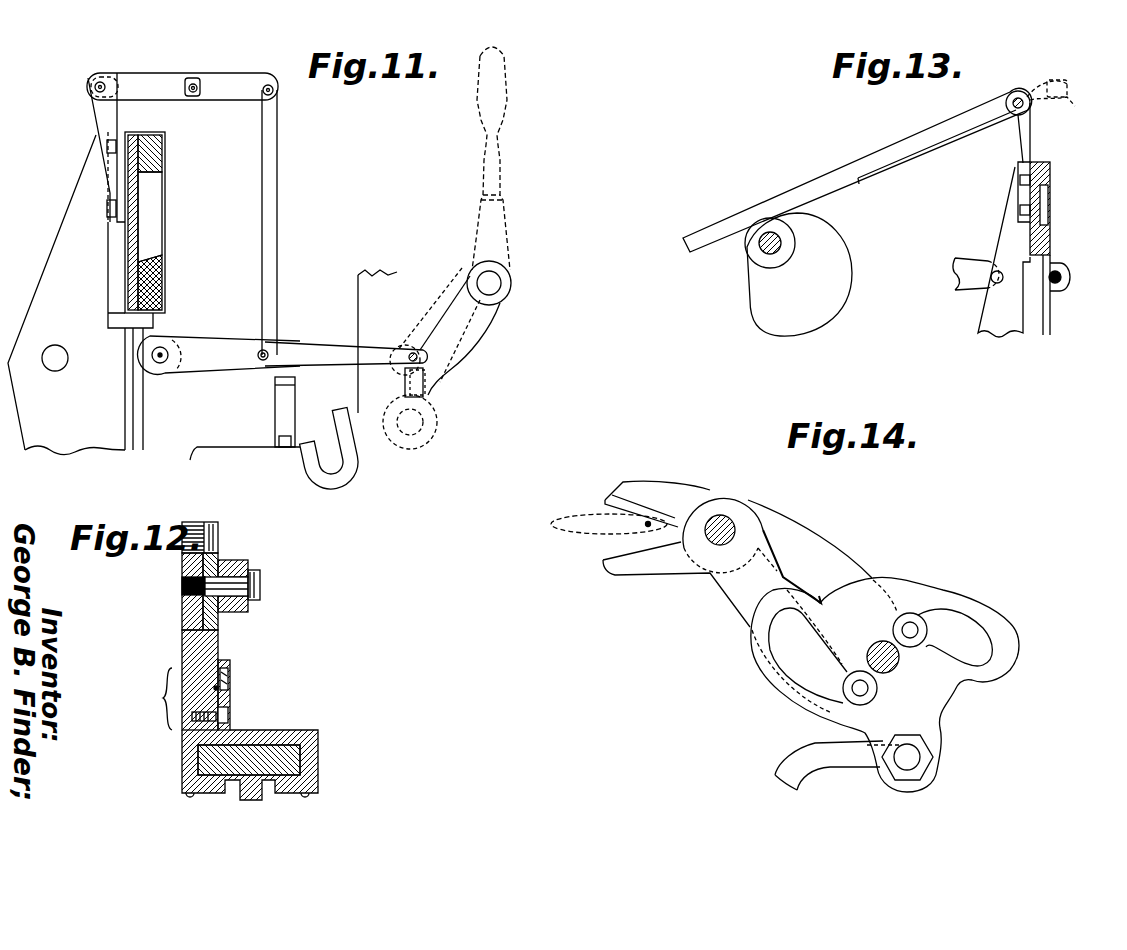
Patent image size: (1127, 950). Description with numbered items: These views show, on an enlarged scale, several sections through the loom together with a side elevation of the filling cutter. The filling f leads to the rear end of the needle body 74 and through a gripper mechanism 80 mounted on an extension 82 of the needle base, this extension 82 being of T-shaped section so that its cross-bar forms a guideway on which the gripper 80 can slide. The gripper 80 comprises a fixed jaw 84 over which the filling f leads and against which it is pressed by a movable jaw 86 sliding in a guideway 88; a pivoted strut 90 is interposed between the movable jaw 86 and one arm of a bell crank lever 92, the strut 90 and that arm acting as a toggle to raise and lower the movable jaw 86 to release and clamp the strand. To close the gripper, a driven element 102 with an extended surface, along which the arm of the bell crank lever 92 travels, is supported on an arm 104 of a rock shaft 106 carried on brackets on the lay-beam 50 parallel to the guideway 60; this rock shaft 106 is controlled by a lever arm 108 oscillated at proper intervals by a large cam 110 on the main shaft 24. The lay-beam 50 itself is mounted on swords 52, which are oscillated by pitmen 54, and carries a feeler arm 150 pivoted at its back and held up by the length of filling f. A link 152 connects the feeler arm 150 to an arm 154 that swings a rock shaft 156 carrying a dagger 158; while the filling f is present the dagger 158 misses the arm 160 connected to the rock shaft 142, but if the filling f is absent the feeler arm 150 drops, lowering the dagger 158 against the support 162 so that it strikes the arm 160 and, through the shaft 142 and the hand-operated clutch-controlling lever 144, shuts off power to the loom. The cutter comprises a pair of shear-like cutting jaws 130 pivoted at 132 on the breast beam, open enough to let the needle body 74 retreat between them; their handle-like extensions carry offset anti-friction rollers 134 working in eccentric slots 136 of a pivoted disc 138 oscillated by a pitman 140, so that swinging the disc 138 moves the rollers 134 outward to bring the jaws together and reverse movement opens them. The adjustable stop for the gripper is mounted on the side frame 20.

In FIG. 11, the side frame 20 is at (358, 286).
In FIG. 13, the main shaft 24 is at (768, 250).
In FIG. 11, the lay-beam 50 is at (144, 132).
In FIG. 13, the lay-beam 50 is at (1045, 163).
In FIG. 11, the sword 52 is at (58, 253).
In FIG. 13, the sword 52 is at (1000, 224).
In FIG. 13, the pitman 54 is at (953, 277).
In FIG. 11, the guideway 60 is at (140, 167).
In FIG. 13, the guideway 60 is at (1050, 202).
In FIG. 14, the needle body 74 is at (583, 532).
In FIG. 12, the gripper mechanism 80 is at (151, 699).
In FIG. 12, the extension 82 is at (258, 796).
In FIG. 12, the fixed jaw 84 is at (222, 703).
In FIG. 12, the movable jaw 86 is at (228, 683).
In FIG. 12, the guideway 88 is at (222, 670).
In FIG. 12, the pivoted strut 90 is at (200, 647).
In FIG. 12, the bell crank lever 92 is at (218, 535).
In FIG. 13, the driven element 102 is at (1077, 105).
In FIG. 13, the arm 104 is at (1055, 81).
In FIG. 13, the rock shaft 106 is at (1016, 100).
In FIG. 13, the lever arm 108 is at (897, 143).
In FIG. 13, the cam 110 is at (850, 258).
In FIG. 14, the cutting jaws 130 is at (670, 489).
In FIG. 14, the pivot 132 is at (718, 515).
In FIG. 14, the anti-friction rollers 134 is at (918, 620).
In FIG. 14, the eccentric slots 136 is at (977, 627).
In FIG. 14, the pivoted disc 138 is at (947, 700).
In FIG. 14, the pitman 140 is at (790, 772).
In FIG. 11, the rock shaft 142 is at (501, 283).
In FIG. 11, the clutch-controlling lever 144 is at (498, 175).
In FIG. 11, the feeler arm 150 is at (240, 72).
In FIG. 11, the link 152 is at (278, 203).
In FIG. 11, the arm 154 is at (216, 349).
In FIG. 11, the rock shaft 156 is at (160, 363).
In FIG. 13, the rock shaft 156 is at (1062, 277).
In FIG. 11, the dagger 158 is at (313, 349).
In FIG. 11, the arm 160 is at (462, 357).
In FIG. 11, the support 162 is at (278, 415).
In FIG. 11, the filling f is at (196, 98).
In FIG. 12, the filling f is at (218, 688).